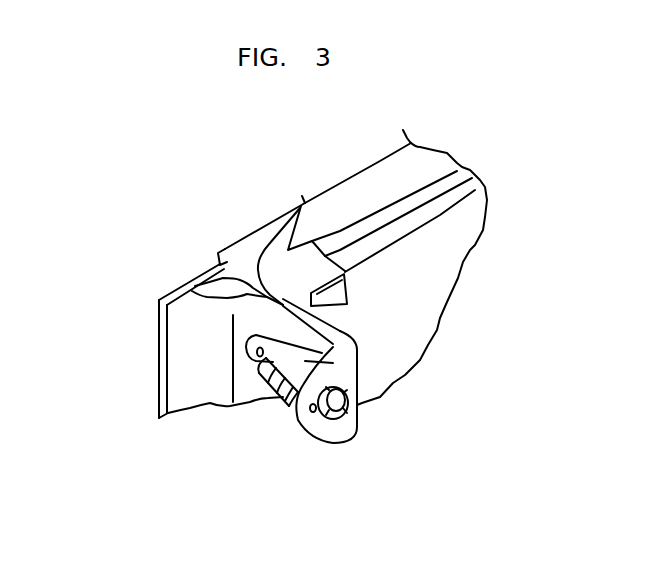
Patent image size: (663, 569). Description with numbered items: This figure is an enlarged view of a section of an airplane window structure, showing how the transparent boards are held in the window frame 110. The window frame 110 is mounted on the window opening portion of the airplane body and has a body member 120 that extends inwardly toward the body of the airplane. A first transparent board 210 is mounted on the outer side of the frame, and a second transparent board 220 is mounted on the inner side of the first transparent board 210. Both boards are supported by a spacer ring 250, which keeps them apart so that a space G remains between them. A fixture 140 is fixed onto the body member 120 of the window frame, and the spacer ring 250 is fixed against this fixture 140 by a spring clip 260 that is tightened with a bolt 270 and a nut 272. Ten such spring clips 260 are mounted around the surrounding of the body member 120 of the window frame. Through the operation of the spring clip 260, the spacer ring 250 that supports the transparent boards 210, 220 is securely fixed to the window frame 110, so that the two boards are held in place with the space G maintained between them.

The space G is at (452, 172).
The window frame 110 is at (247, 250).
The body member 120 is at (190, 286).
The fixture 140 is at (248, 341).
The first transparent board 210 is at (369, 169).
The second transparent board 220 is at (458, 190).
The spacer ring 250 is at (285, 273).
The spring clip 260 is at (318, 432).
The bolt 270 is at (338, 422).
The nut 272 is at (273, 388).